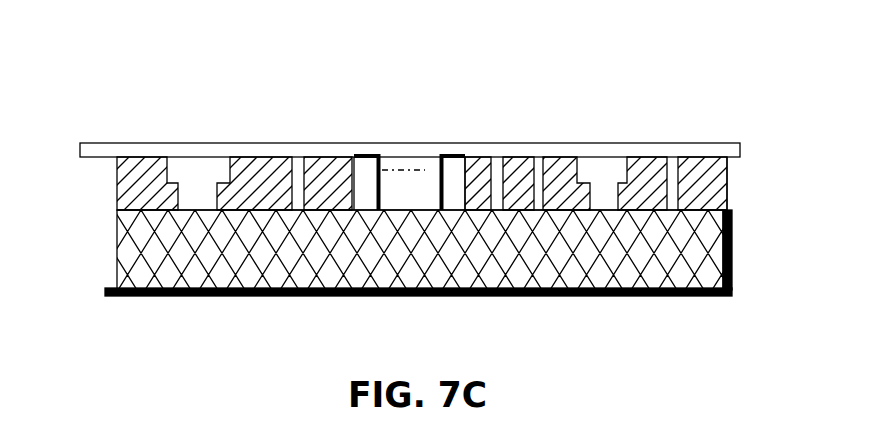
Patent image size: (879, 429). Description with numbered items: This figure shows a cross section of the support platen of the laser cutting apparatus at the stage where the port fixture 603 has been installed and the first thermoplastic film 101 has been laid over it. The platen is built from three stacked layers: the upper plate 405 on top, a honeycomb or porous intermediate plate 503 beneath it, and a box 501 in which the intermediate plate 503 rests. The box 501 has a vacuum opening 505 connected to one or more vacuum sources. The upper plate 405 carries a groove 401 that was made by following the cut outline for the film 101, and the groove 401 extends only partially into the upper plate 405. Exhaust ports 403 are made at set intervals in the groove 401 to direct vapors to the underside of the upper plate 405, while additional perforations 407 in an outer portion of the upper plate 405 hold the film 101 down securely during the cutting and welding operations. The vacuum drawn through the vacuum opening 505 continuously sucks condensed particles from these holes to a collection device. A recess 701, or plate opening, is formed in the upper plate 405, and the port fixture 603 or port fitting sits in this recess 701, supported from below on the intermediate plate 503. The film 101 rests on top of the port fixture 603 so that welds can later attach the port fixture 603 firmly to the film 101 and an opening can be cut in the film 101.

The film 101 is at (103, 143).
The groove 401 is at (217, 170).
The exhaust ports 403 is at (192, 198).
The upper plate 405 is at (728, 183).
The perforations 407 is at (303, 170).
The box 501 is at (733, 250).
The intermediate plate 503 is at (120, 237).
The vacuum opening 505 is at (117, 252).
The port fixture 603 is at (452, 156).
The recess 701 is at (403, 170).